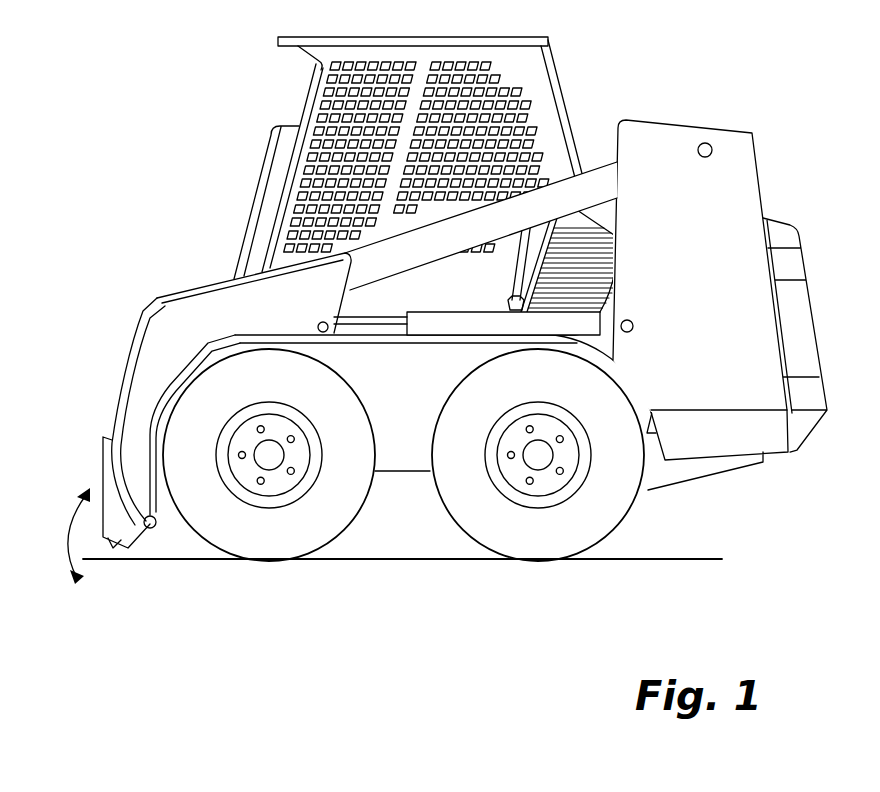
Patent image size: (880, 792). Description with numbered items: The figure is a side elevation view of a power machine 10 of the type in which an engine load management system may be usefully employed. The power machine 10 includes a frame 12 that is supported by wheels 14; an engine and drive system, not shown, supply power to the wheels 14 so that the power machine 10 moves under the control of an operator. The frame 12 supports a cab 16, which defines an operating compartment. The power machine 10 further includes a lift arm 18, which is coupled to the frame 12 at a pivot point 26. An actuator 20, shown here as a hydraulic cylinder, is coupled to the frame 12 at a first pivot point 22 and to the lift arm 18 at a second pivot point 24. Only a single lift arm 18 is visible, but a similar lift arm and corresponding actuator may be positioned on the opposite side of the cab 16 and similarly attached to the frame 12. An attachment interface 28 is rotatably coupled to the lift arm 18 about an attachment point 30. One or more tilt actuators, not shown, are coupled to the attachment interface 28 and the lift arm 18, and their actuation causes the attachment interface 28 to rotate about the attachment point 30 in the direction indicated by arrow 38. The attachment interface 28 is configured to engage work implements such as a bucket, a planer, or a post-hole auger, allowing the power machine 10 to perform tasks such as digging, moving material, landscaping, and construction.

The power machine 10 is at (191, 211).
The frame 12 is at (713, 440).
The wheels 14 is at (250, 532).
The cab 16 is at (307, 118).
The lift arm 18 is at (202, 310).
The actuator 20 is at (447, 322).
The first pivot point 22 is at (633, 322).
The second pivot point 24 is at (323, 322).
The pivot point 26 is at (703, 143).
The attachment interface 28 is at (104, 472).
The attachment point 30 is at (160, 530).
The arrow 38 is at (68, 537).